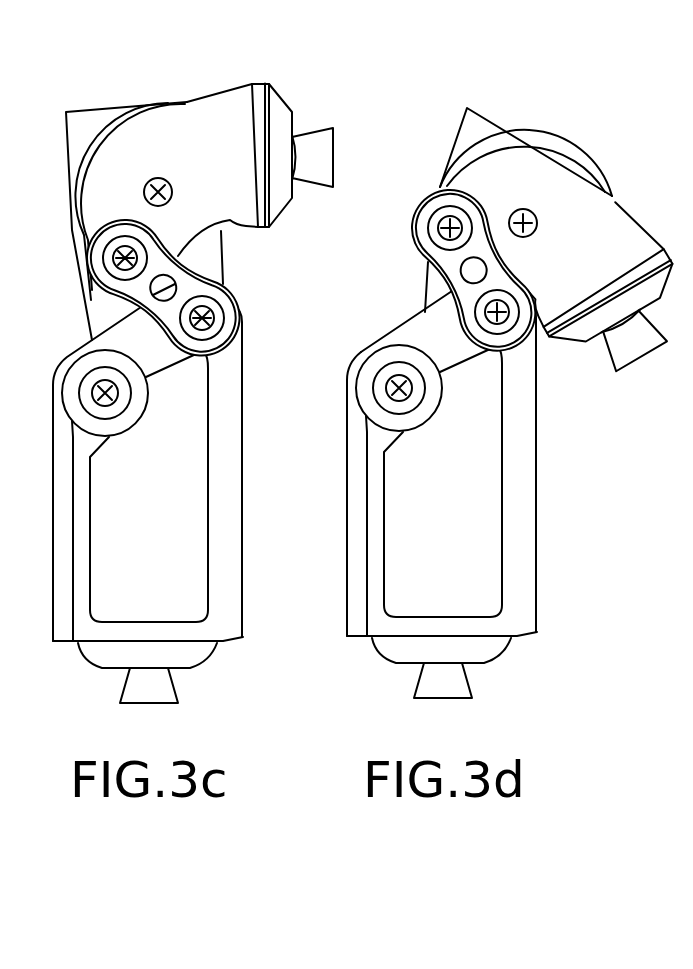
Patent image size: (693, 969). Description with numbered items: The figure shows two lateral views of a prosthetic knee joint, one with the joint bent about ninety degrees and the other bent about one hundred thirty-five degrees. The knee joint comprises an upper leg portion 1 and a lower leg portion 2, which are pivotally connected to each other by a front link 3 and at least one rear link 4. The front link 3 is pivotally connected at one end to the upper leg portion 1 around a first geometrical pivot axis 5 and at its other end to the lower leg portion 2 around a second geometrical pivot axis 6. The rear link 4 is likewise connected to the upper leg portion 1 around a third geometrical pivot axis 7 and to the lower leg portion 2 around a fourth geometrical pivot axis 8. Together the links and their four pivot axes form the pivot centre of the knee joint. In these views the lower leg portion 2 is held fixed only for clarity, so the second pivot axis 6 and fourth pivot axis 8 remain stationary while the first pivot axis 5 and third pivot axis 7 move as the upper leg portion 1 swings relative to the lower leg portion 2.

In FIG. 3c, the upper leg portion 1 is at (230, 112).
In FIG. 3d, the upper leg portion 1 is at (612, 238).
In FIG. 3c, the lower leg portion 2 is at (108, 573).
In FIG. 3d, the lower leg portion 2 is at (515, 573).
In FIG. 3d, the front link 3 is at (488, 128).
In FIG. 3c, the rear link 4 is at (223, 263).
In FIG. 3d, the rear link 4 is at (452, 272).
In FIG. 3c, the first geometrical pivot axis 5 is at (157, 178).
In FIG. 3d, the first geometrical pivot axis 5 is at (538, 223).
In FIG. 3c, the second geometrical pivot axis 6 is at (92, 393).
In FIG. 3d, the second geometrical pivot axis 6 is at (392, 393).
In FIG. 3c, the third geometrical pivot axis 7 is at (113, 260).
In FIG. 3d, the third geometrical pivot axis 7 is at (448, 222).
In FIG. 3c, the fourth geometrical pivot axis 8 is at (214, 318).
In FIG. 3d, the fourth geometrical pivot axis 8 is at (500, 316).